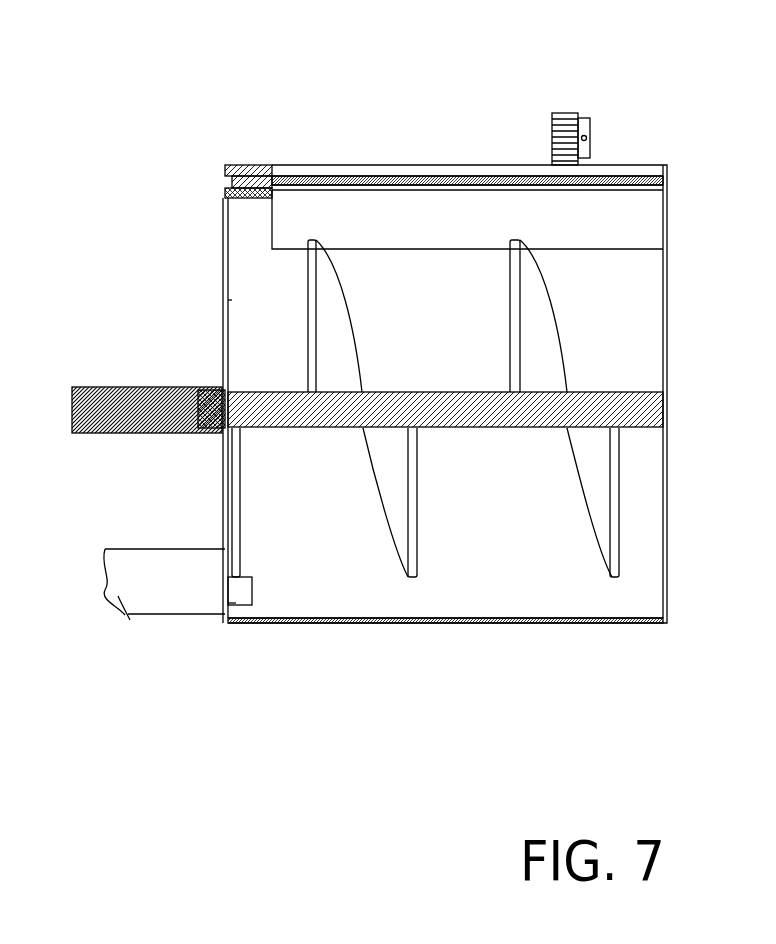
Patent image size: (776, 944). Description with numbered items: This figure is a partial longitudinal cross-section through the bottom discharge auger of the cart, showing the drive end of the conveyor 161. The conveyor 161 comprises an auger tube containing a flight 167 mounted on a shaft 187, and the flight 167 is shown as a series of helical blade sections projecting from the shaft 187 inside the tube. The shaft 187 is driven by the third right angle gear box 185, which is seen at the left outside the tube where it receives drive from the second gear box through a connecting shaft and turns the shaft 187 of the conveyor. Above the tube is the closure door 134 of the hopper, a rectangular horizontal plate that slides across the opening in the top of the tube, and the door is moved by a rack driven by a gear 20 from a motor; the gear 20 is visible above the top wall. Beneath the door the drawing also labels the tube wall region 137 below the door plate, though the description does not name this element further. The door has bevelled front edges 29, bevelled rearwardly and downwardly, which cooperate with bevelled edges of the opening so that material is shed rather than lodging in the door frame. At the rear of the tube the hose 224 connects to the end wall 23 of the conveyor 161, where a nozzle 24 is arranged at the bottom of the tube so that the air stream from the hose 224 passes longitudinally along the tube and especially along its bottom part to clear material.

The gear 20 is at (563, 113).
The end wall 23 is at (228, 232).
The nozzle 24 is at (240, 588).
The bevelled front edges 29 is at (284, 196).
The closure door 134 is at (430, 173).
The inner top wall 137 is at (580, 205).
The conveyor tube 161 is at (508, 612).
The flight 167 is at (310, 355).
The third right angle gear box 185 is at (100, 416).
The shaft 187 is at (291, 424).
The hose 224 is at (180, 558).